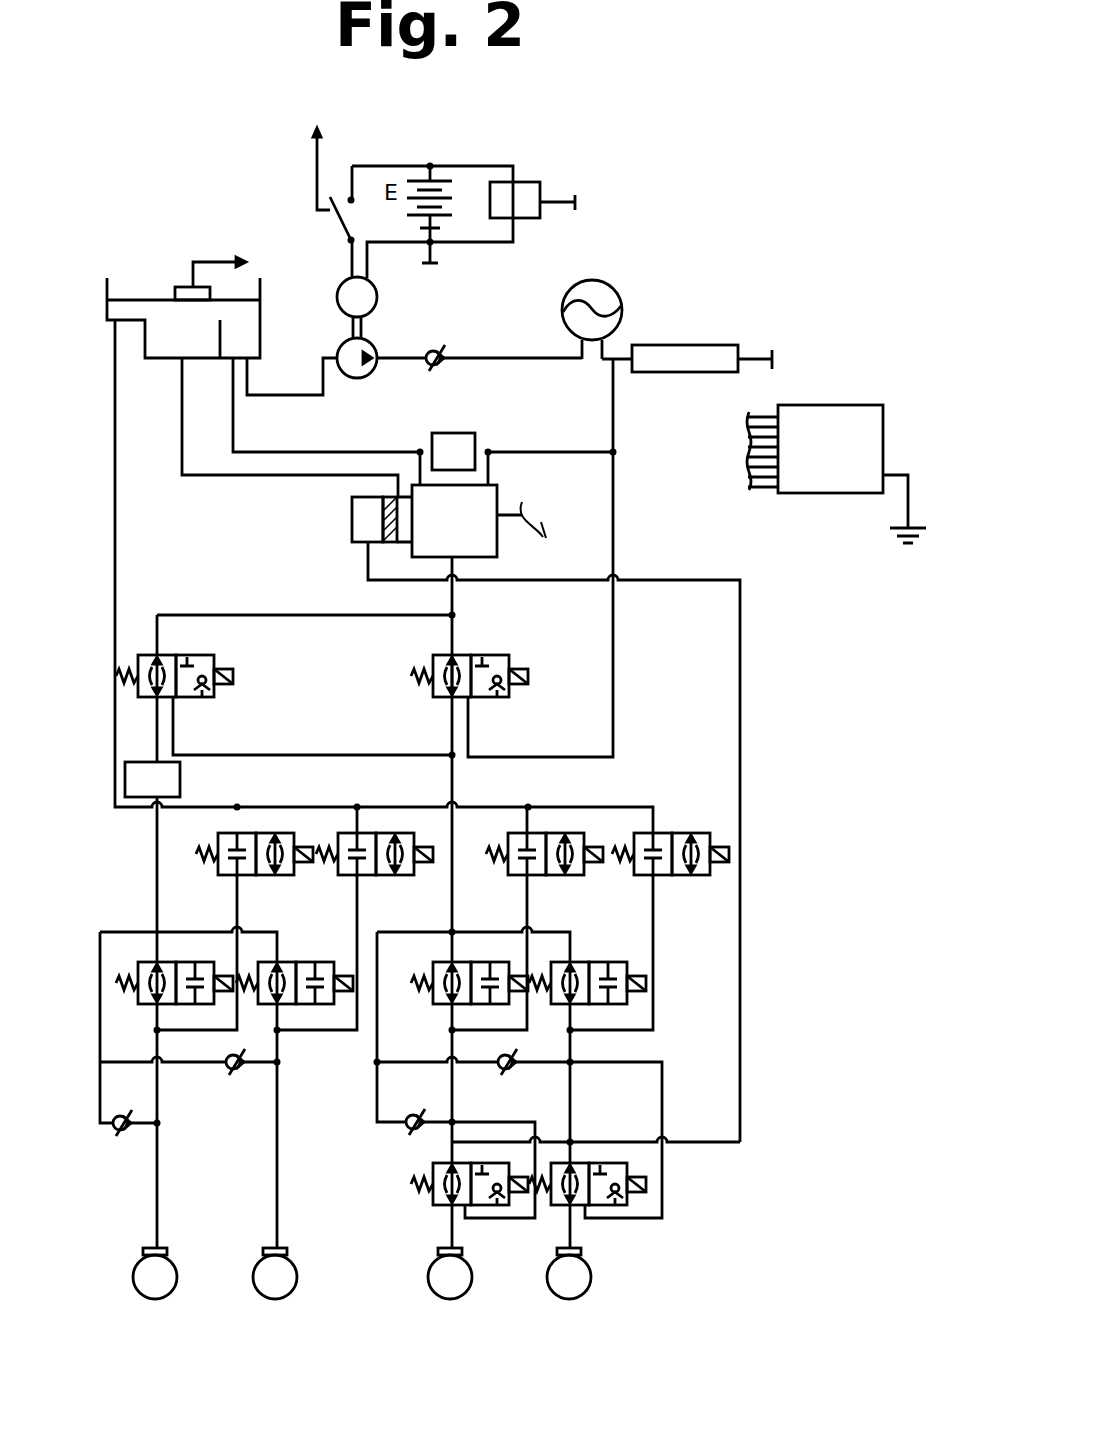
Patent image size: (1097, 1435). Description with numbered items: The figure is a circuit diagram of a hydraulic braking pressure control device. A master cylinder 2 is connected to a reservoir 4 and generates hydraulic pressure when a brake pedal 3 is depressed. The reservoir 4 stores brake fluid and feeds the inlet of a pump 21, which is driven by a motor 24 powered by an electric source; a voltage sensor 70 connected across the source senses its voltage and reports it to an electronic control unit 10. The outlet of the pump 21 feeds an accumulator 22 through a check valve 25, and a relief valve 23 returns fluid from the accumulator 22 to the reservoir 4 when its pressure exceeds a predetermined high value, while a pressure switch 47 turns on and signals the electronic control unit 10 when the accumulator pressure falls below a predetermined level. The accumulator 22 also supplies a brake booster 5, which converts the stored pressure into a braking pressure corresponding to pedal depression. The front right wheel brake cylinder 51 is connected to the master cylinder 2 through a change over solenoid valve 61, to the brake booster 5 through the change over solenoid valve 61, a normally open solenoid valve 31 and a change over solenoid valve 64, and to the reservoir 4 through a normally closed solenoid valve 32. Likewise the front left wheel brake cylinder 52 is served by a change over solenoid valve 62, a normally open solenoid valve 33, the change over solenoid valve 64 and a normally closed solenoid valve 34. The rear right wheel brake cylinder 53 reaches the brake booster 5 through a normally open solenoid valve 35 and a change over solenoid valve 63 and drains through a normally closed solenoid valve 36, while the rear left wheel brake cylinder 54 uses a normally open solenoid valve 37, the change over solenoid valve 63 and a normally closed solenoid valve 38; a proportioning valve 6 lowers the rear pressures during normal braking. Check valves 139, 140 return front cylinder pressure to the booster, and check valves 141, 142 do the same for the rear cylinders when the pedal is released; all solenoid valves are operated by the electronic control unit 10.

The master cylinder 2 is at (352, 522).
The brake pedal 3 is at (543, 537).
The reservoir 4 is at (260, 320).
The brake booster 5 is at (498, 490).
The proportioning valve 6 is at (180, 780).
The electronic control unit 10 is at (833, 405).
The pump 21 is at (372, 345).
The accumulator 22 is at (615, 290).
The relief valve 23 is at (475, 435).
The motor 24 is at (377, 292).
The check valve 25 is at (432, 368).
The normally open solenoid valve 31 is at (563, 1005).
The normally closed solenoid valve 32 is at (645, 875).
The normally open solenoid valve 33 is at (442, 1005).
The normally closed solenoid valve 34 is at (520, 875).
The normally open solenoid valve 35 is at (265, 1005).
The normally closed solenoid valve 36 is at (350, 875).
The normally open solenoid valve 37 is at (147, 1005).
The normally closed solenoid valve 38 is at (228, 875).
The pressure switch 47 is at (705, 345).
The front right wheel brake cylinder 51 is at (548, 1285).
The front left wheel brake cylinder 52 is at (430, 1282).
The rear right wheel brake cylinder 53 is at (255, 1285).
The rear left wheel brake cylinder 54 is at (133, 1282).
The change over solenoid valve 61 is at (563, 1208).
The change over solenoid valve 62 is at (440, 1208).
The change over solenoid valve 63 is at (205, 698).
The change over solenoid valve 64 is at (442, 700).
The voltage sensor 70 is at (540, 190).
The check valve 139 is at (507, 1070).
The check valve 140 is at (413, 1130).
The check valve 141 is at (238, 1072).
The check valve 142 is at (125, 1135).